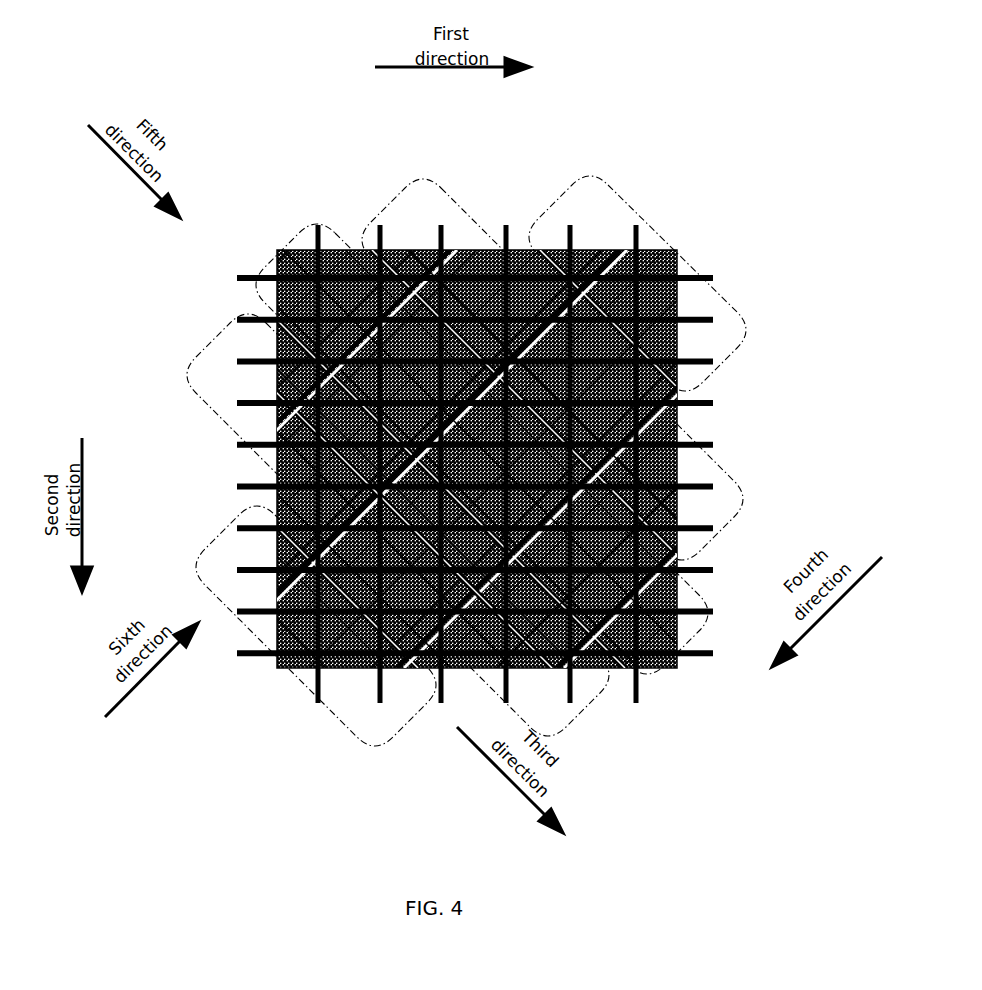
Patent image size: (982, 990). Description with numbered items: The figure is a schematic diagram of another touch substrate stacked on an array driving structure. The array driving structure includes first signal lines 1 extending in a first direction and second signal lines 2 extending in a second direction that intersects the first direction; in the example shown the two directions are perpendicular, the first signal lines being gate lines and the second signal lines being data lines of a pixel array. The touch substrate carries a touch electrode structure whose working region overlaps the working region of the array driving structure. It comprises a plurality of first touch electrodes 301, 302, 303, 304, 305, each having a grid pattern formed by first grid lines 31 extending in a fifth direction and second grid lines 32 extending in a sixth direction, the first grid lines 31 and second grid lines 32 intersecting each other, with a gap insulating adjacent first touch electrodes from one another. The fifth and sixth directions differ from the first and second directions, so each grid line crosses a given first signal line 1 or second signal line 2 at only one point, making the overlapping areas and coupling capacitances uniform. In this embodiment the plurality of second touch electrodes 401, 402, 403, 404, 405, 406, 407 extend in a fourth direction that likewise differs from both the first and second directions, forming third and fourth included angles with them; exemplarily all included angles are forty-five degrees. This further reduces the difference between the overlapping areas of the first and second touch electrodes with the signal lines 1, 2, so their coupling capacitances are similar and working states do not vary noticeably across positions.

The first signal line 1 is at (238, 318).
The second signal line 2 is at (318, 703).
The first grid line 31 is at (277, 393).
The second grid line 32 is at (277, 422).
The first touch electrode 301 is at (220, 523).
The first touch electrode 302 is at (208, 328).
The first touch electrode 303 is at (273, 233).
The first touch electrode 304 is at (428, 172).
The first touch electrode 305 is at (550, 197).
The second touch electrode 401 is at (678, 632).
The second touch electrode 402 is at (677, 510).
The second touch electrode 403 is at (677, 380).
The second touch electrode 404 is at (680, 253).
The second touch electrode 405 is at (550, 250).
The second touch electrode 406 is at (405, 250).
The second touch electrode 407 is at (330, 220).